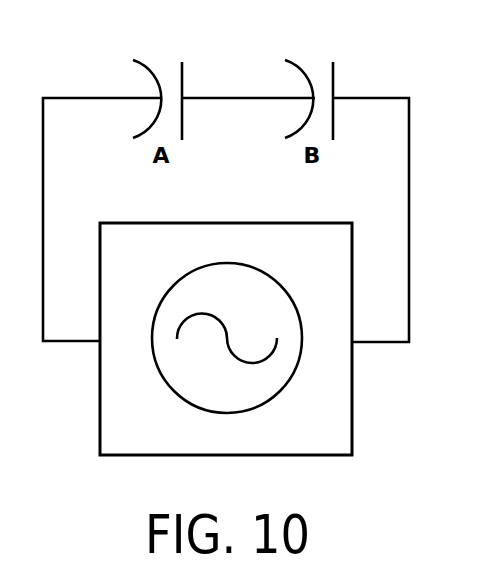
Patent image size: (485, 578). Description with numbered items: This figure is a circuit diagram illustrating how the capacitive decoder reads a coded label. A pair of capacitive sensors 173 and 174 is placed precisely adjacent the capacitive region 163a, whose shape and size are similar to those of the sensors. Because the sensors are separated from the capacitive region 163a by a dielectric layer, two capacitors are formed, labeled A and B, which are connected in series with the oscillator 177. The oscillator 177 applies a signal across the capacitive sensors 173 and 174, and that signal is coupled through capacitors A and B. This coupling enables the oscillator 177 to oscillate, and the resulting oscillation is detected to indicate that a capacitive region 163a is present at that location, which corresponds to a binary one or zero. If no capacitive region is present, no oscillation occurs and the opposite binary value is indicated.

The capacitive region 163a is at (277, 72).
The capacitive sensor 173 is at (149, 60).
The capacitive sensor 174 is at (333, 78).
The oscillator 177 is at (115, 377).